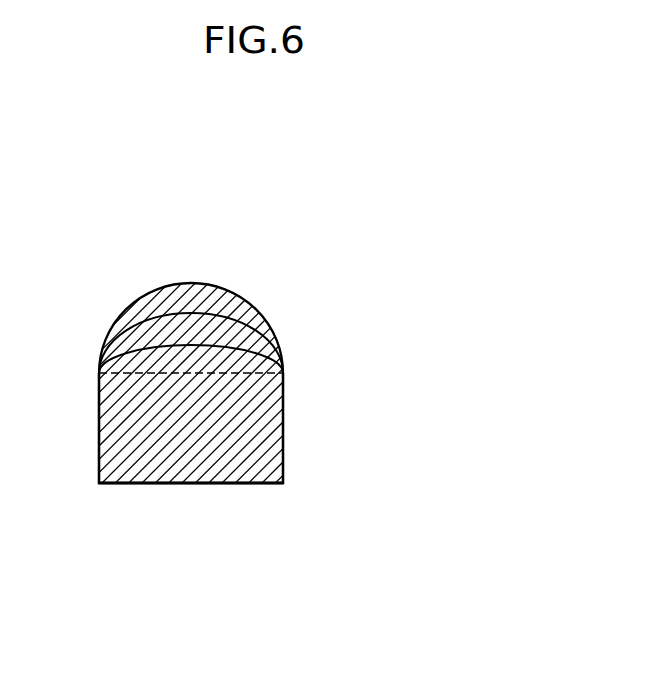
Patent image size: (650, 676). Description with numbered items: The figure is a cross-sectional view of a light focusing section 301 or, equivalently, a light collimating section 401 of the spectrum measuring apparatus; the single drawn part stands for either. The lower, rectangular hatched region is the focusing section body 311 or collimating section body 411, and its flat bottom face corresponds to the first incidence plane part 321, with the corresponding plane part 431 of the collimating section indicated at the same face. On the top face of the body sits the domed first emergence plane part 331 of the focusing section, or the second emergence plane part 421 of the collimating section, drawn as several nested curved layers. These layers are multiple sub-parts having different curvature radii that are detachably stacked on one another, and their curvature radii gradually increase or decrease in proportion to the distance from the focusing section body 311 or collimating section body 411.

The light focusing section 301 is at (257, 318).
The light collimating section 401 is at (345, 165).
The focusing section body 311 is at (191, 480).
The collimating section body 411 is at (154, 456).
The first incidence plane part 321 is at (228, 538).
The bottom end face 431 is at (237, 484).
The first emergence plane part 331 is at (181, 277).
The second emergence plane part 421 is at (160, 305).